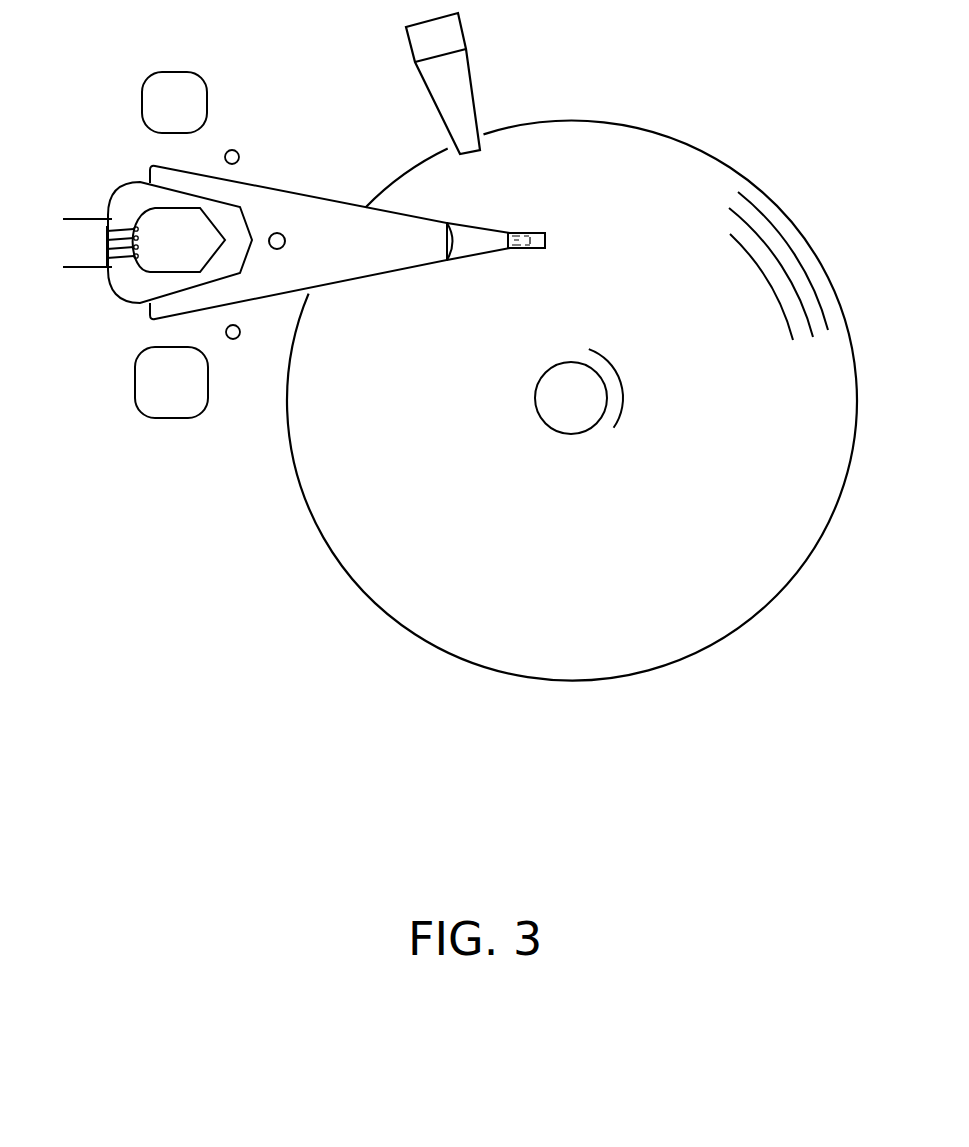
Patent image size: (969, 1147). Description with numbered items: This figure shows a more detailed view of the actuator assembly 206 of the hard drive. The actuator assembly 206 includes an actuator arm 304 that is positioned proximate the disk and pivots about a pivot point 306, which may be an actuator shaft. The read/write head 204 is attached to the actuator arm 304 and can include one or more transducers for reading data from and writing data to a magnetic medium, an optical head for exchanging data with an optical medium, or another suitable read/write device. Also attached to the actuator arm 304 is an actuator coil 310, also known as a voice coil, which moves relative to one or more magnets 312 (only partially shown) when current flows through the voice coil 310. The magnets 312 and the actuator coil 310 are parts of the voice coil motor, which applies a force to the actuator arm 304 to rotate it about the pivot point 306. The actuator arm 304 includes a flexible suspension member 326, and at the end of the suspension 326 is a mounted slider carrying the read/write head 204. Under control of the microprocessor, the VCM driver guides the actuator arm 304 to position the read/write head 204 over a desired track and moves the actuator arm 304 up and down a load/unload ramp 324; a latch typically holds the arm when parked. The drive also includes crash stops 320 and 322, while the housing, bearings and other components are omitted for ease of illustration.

The read/write head 204 is at (520, 232).
The actuator assembly 206 is at (306, 152).
The actuator arm 304 is at (376, 253).
The pivot point 306 is at (277, 233).
The actuator coil 310 is at (110, 197).
The magnets 312 is at (142, 86).
The crash stop 320 is at (245, 335).
The crash stop 322 is at (238, 150).
The load/unload ramp 324 is at (480, 117).
The flexible suspension member 326 is at (468, 258).